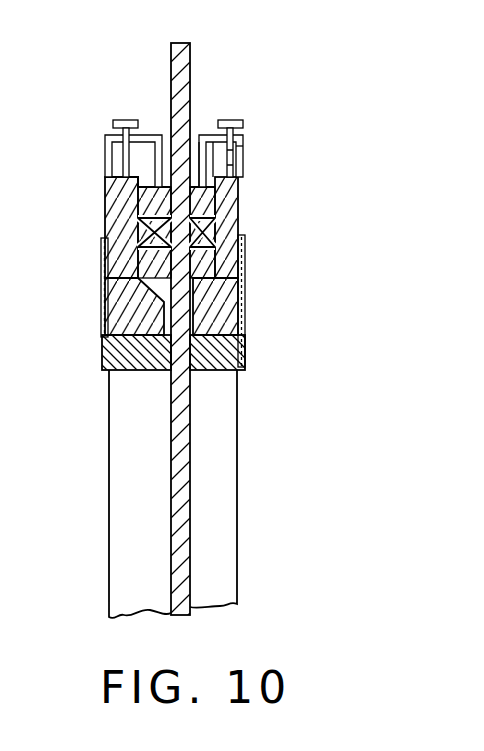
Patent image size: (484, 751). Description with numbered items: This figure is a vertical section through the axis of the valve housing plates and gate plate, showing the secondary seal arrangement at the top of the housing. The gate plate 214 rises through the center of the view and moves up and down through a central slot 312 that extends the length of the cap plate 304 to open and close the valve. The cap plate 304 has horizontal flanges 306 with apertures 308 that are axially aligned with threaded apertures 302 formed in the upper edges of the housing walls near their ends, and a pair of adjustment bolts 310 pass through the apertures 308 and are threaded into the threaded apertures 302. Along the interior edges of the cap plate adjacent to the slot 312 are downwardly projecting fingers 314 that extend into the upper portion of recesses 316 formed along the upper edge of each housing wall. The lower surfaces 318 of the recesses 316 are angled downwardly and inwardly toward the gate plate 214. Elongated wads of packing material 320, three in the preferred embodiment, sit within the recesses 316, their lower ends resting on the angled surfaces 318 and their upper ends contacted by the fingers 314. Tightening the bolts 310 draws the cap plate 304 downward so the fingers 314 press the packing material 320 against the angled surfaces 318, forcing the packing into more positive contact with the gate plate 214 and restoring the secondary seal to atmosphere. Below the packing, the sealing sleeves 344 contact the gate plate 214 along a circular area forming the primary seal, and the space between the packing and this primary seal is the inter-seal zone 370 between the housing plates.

The gate plate 214 is at (172, 43).
The threaded apertures 302 is at (110, 172).
The cap plate 304 is at (222, 119).
The horizontal flanges 306 is at (236, 139).
The apertures 308 is at (243, 148).
The adjustment bolts 310 is at (233, 158).
The central slot 312 is at (135, 193).
The fingers 314 is at (200, 140).
The recesses 316 is at (130, 235).
The lower surfaces 318 is at (204, 290).
The packing material 320 is at (110, 287).
The sealing sleeves 344 is at (248, 351).
The inter-seal zone 370 is at (133, 326).